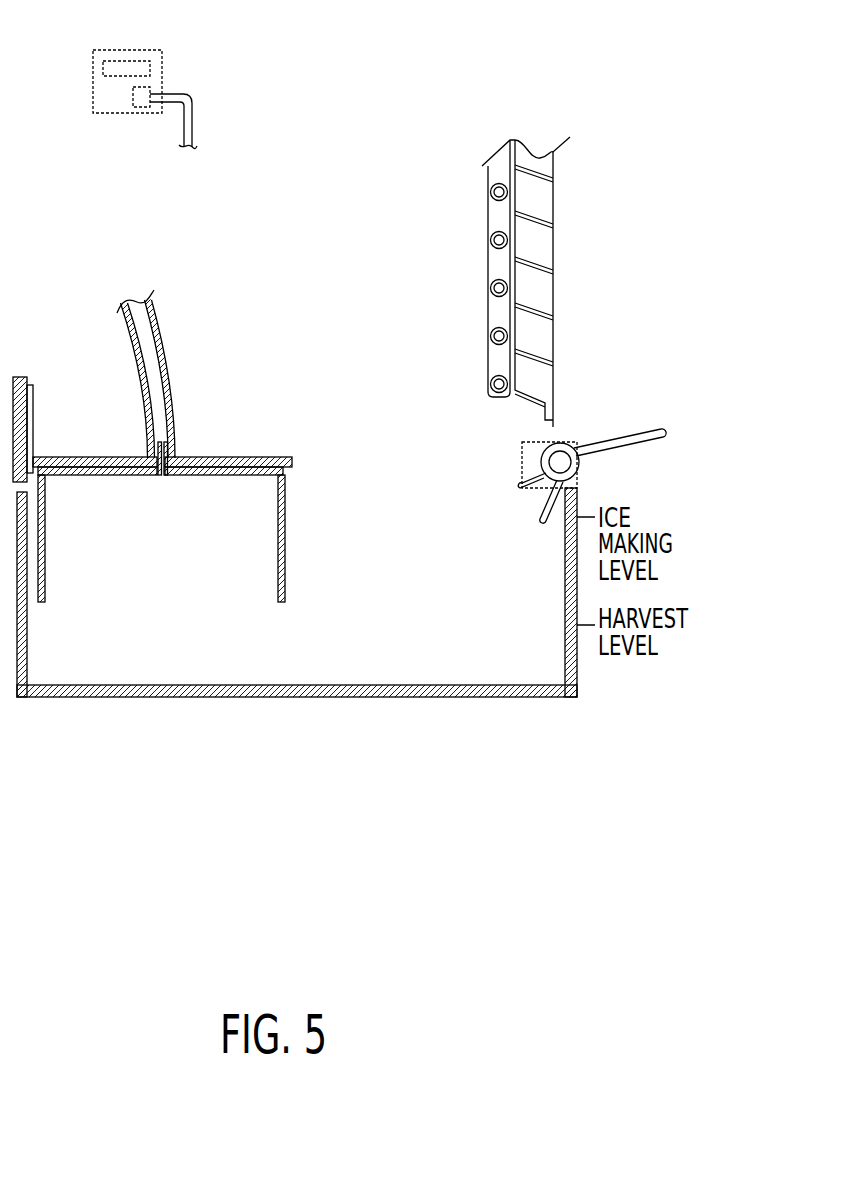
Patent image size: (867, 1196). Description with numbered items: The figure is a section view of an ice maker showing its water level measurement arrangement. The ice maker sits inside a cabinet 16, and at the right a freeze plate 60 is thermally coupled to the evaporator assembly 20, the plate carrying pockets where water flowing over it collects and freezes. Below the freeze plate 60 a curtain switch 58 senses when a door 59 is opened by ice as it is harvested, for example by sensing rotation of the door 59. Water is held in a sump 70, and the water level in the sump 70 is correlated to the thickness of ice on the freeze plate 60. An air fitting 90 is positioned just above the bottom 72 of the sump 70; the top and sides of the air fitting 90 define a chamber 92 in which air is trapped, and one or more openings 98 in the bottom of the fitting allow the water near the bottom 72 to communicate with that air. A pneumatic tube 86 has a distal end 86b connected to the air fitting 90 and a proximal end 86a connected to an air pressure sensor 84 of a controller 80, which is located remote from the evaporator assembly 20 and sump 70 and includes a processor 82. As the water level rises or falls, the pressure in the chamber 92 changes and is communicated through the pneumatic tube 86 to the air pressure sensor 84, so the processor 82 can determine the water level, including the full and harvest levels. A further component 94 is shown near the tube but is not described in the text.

The cabinet 16 is at (33, 400).
The evaporator assembly 20 is at (498, 219).
The curtain switch 58 is at (524, 442).
The door 59 is at (662, 430).
The freeze plate 60 is at (543, 218).
The sump 70 is at (297, 624).
The bottom 72 is at (345, 685).
The controller 80 is at (142, 50).
The processor 82 is at (110, 60).
The air pressure sensor 84 is at (133, 98).
The pneumatic tube 86 is at (192, 122).
The proximal end 86a is at (152, 97).
The distal end 86b is at (172, 430).
The air fitting 90 is at (286, 512).
The chamber 92 is at (286, 545).
The fitting 94 is at (150, 432).
The openings 98 is at (148, 603).